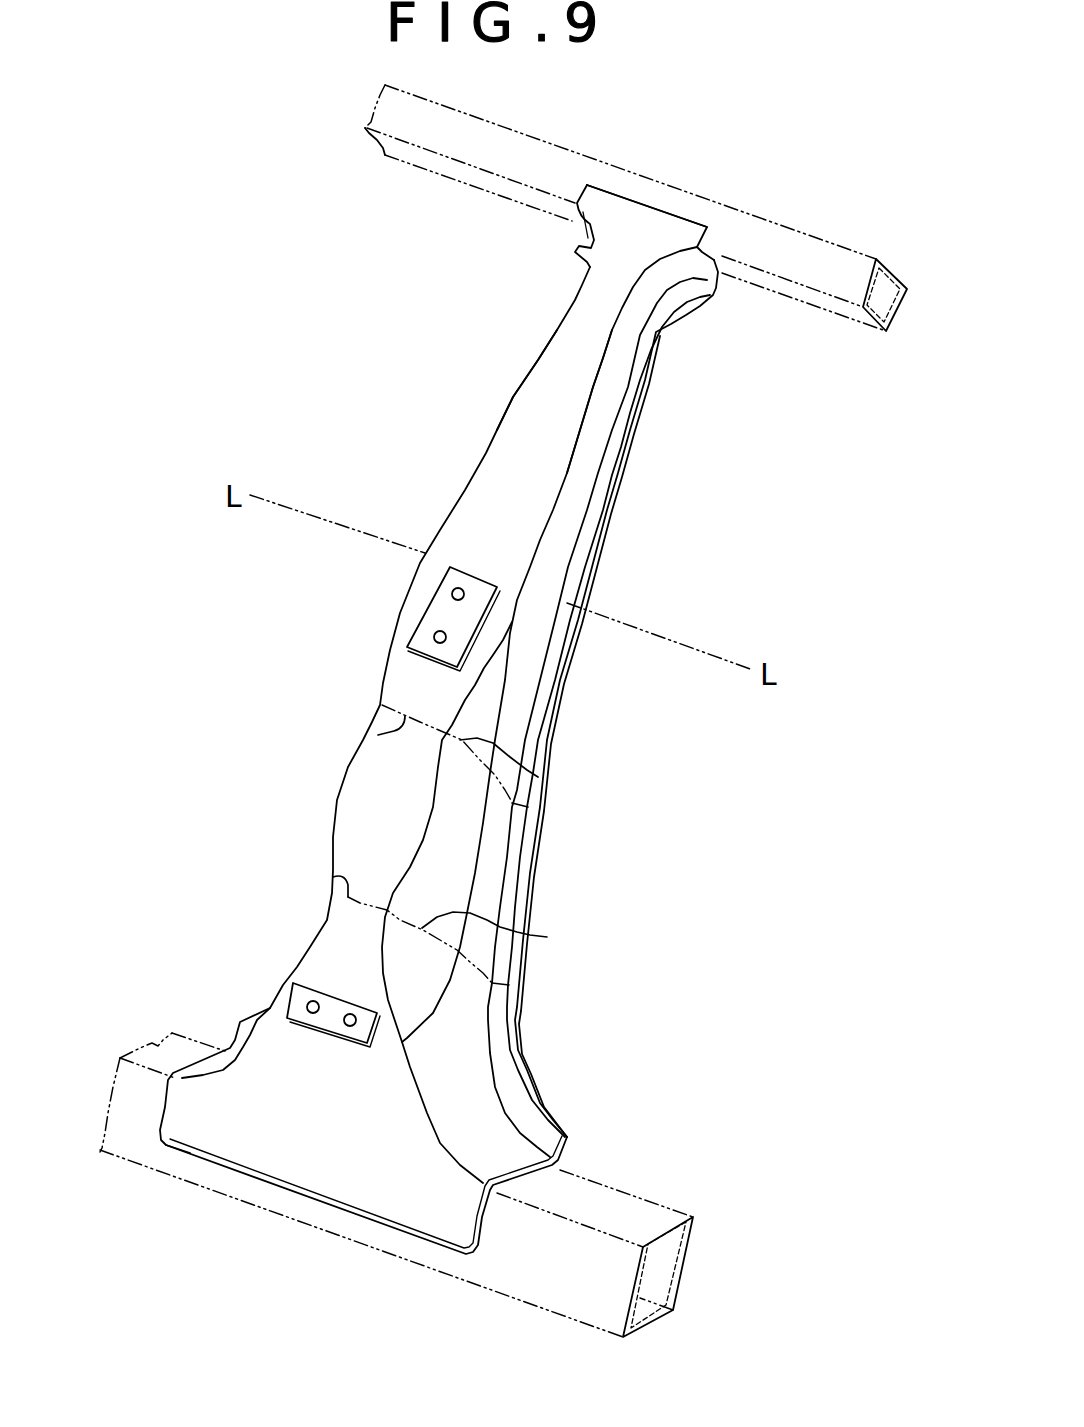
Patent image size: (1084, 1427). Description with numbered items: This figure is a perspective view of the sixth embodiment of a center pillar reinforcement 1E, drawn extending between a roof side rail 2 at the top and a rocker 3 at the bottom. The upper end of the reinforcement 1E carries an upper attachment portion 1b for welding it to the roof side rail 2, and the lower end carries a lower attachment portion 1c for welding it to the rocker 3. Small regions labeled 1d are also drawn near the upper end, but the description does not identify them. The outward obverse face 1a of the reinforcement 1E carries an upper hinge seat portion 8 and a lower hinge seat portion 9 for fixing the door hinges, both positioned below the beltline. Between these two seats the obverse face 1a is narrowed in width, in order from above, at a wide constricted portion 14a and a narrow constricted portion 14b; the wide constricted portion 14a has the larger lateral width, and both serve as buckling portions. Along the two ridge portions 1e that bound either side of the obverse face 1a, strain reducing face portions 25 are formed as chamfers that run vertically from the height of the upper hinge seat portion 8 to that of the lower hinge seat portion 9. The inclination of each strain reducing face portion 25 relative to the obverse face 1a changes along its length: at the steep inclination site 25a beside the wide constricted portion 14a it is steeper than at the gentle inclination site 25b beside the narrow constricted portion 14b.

The obverse face 1a is at (437, 684).
The upper attachment portion 1b is at (676, 201).
The lower attachment portion 1c is at (414, 1195).
The notch portion 1d is at (617, 279).
The ridge portions 1e is at (571, 401).
The reinforcement 1E is at (612, 708).
The roof side rail 2 is at (636, 208).
The rocker 3 is at (434, 1185).
The upper hinge seat portion 8 is at (425, 619).
The lower hinge seat portion 9 is at (286, 1015).
The wide constricted portion 14a is at (385, 753).
The narrow constricted portion 14b is at (358, 910).
The strain reducing face portion 25 is at (556, 861).
The steep inclination site 25a is at (547, 772).
The gentle inclination site 25b is at (528, 948).